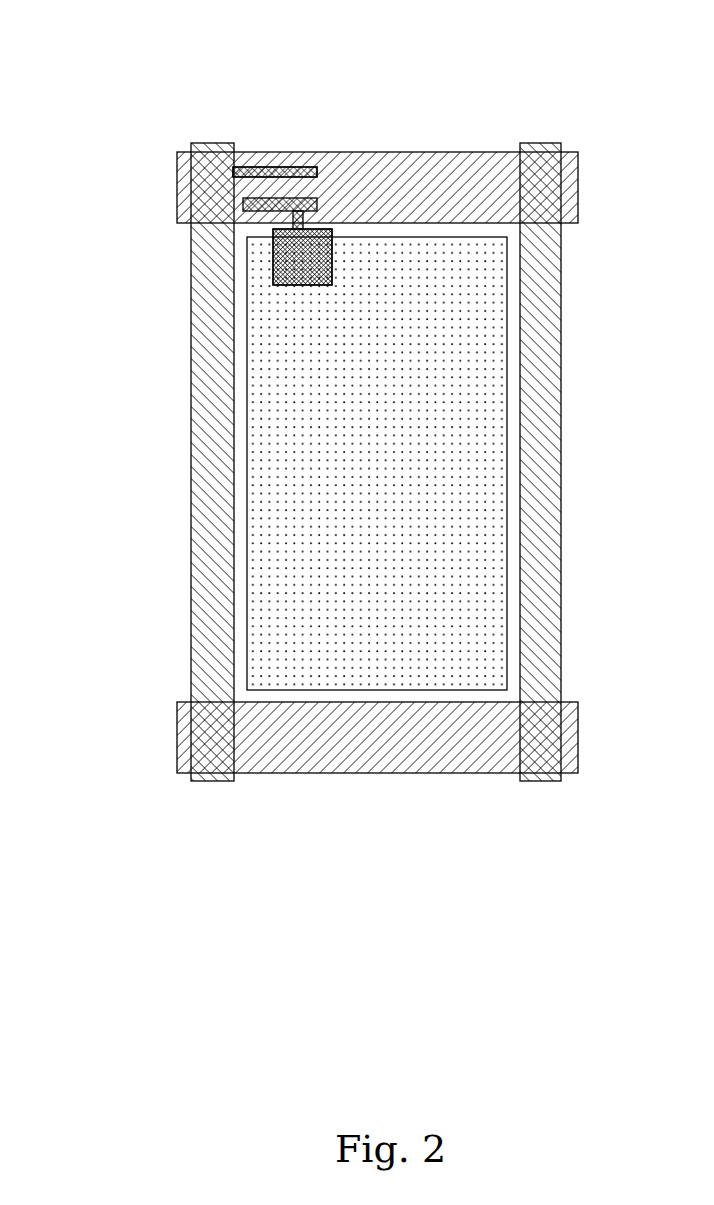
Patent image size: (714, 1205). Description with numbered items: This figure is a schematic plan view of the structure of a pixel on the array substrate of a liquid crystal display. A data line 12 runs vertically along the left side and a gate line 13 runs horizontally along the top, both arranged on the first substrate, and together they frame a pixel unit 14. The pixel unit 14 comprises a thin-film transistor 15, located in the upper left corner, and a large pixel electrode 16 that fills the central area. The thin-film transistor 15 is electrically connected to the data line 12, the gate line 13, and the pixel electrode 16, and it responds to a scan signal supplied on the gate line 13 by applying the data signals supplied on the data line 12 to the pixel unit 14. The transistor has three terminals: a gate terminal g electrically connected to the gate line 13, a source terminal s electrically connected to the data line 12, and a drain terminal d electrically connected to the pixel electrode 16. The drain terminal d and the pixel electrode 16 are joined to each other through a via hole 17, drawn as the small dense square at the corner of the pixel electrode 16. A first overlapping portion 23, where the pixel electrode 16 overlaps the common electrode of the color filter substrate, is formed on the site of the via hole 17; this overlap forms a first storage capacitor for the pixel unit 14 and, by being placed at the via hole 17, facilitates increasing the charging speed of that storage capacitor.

The data line 12 is at (193, 372).
The gate line 13 is at (437, 183).
The pixel unit 14 is at (370, 348).
The thin-film transistor 15 is at (282, 170).
The pixel electrode 16 is at (355, 253).
The via hole 17 is at (272, 257).
The first overlapping portion 23 is at (272, 240).
The drain terminal d is at (267, 228).
The gate terminal g is at (267, 196).
The source terminal s is at (254, 166).